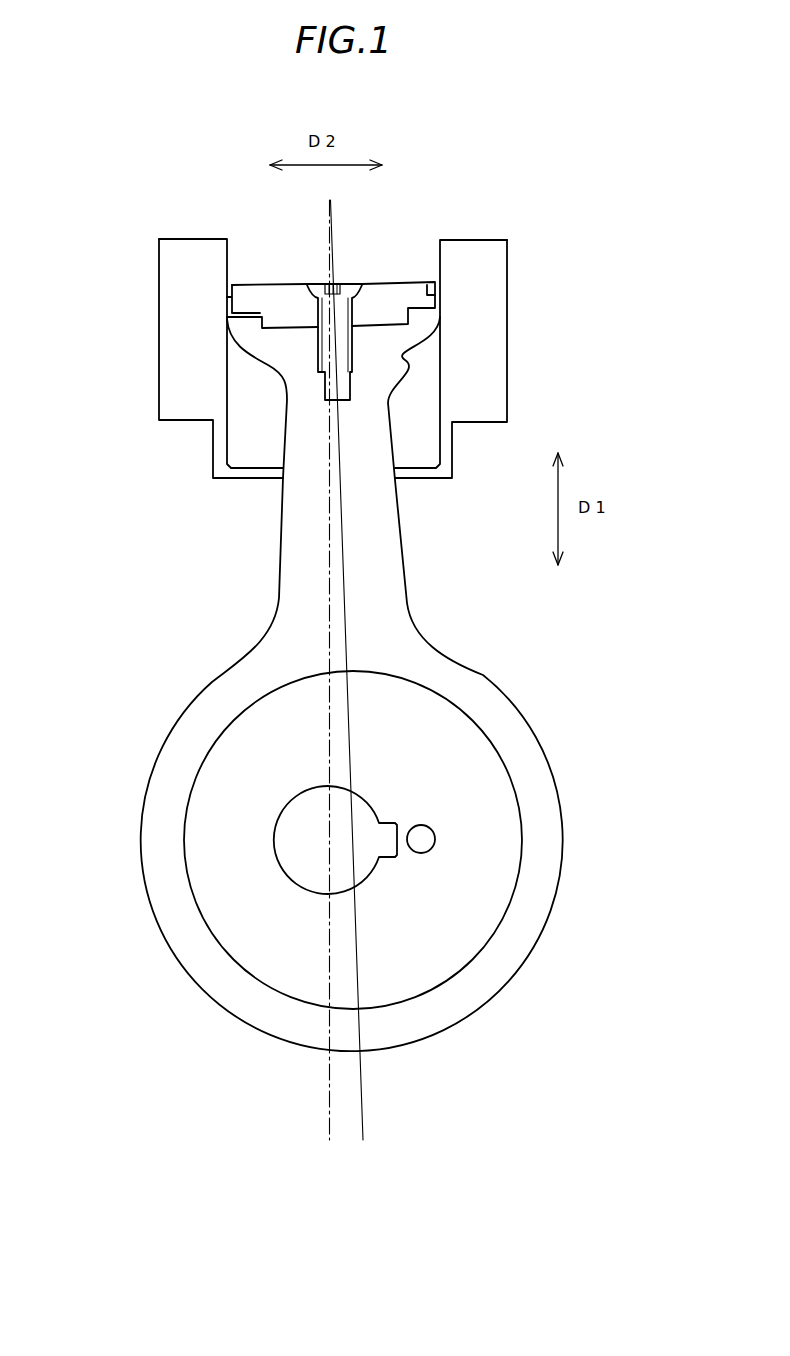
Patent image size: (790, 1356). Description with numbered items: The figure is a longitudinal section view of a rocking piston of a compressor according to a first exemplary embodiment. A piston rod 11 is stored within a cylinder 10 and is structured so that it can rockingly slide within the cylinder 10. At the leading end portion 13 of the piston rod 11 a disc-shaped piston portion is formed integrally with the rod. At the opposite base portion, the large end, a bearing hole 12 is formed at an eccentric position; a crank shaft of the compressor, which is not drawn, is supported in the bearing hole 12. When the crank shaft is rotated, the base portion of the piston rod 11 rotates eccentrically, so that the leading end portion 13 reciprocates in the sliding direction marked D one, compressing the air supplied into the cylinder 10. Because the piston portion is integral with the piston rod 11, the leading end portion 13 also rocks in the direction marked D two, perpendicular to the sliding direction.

The cylinder 10 is at (480, 272).
The piston rod 11 is at (222, 579).
The bearing hole 12 is at (302, 833).
The leading end portion 13 is at (393, 340).